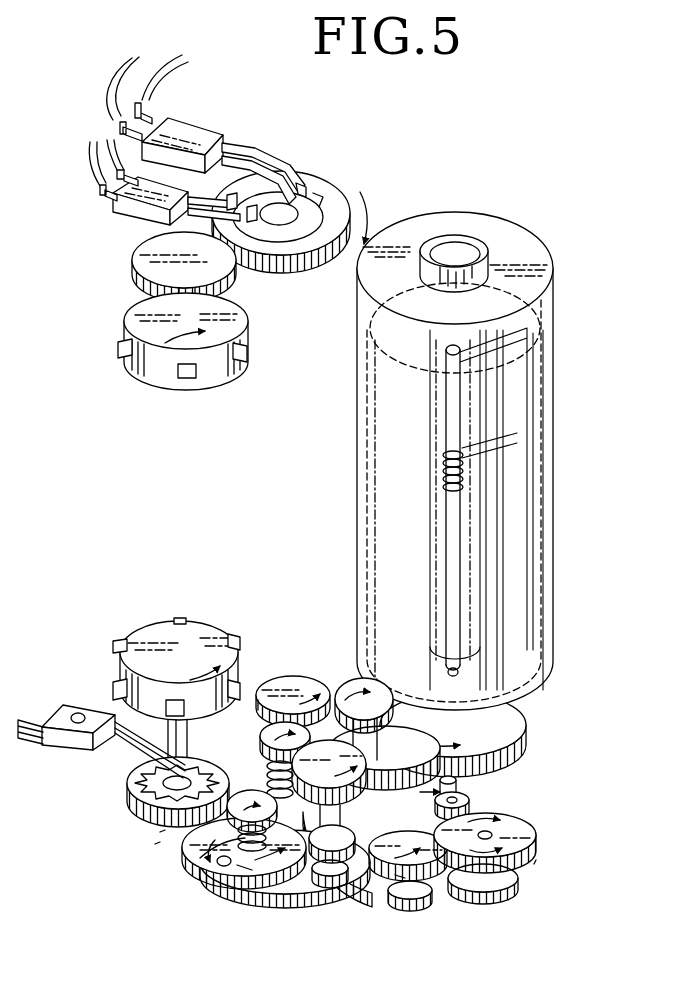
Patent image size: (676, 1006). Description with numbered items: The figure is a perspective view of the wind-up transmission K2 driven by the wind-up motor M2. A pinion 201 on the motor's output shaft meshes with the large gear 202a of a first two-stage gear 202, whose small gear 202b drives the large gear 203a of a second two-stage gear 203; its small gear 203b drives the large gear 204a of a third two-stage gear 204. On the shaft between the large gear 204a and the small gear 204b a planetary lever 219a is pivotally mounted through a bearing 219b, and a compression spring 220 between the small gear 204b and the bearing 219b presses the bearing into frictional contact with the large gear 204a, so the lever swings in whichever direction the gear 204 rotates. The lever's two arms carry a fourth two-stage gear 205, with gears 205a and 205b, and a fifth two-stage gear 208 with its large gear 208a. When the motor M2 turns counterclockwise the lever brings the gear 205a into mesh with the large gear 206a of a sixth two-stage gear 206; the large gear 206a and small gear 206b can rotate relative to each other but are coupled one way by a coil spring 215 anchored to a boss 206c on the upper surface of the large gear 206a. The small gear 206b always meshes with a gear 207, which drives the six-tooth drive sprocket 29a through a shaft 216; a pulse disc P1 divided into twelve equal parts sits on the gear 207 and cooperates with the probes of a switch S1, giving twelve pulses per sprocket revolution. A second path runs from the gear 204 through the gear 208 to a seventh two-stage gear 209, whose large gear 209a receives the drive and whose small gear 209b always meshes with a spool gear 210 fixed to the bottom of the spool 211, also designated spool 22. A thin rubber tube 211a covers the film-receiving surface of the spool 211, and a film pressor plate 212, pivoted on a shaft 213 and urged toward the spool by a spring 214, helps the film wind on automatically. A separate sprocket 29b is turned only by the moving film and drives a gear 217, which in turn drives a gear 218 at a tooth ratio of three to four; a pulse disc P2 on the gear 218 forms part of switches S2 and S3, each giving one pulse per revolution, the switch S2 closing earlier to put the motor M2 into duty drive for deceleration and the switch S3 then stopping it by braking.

The switch S1 is at (62, 745).
The switch S2 is at (118, 212).
The switch S3 is at (200, 124).
The pulse forming disc P1 is at (129, 804).
The pulse disc P2 is at (336, 186).
The wind-up motor M2 is at (360, 396).
The second gear train K2 is at (567, 788).
The spool 22 is at (568, 482).
The drive sprocket 29a is at (145, 638).
The sprocket 29b is at (160, 383).
The pinion 201 is at (485, 796).
The 2-stage gear 202 is at (545, 861).
The large gear 202a is at (527, 822).
The small gear 202b is at (510, 880).
The 2-stage gear 203 is at (410, 912).
The large gear 203a is at (410, 903).
The small gear 203b is at (428, 893).
The 2-stage gear 204 is at (155, 841).
The large gear 204a is at (299, 898).
The small gear 204b is at (248, 712).
The 2-stage gear 205 is at (329, 868).
The large gear 205a is at (328, 742).
The small gear 205b is at (326, 905).
The 2-stage gear 206 is at (264, 903).
The large gear 206a is at (232, 880).
The small gear 206b is at (230, 822).
The carrier pin 206c is at (216, 867).
The gear 207 is at (165, 829).
The 2-stage gear 208 is at (253, 676).
The large gear 208a is at (285, 678).
The 2-stage gear 209 is at (458, 786).
The large gear 209a is at (388, 740).
The small gear 209b is at (353, 682).
The spool gear 210 is at (522, 724).
The spool 211 is at (545, 640).
The rubber tube 211a is at (360, 445).
The film pressor plate 212 is at (530, 374).
The shaft 213 is at (445, 544).
The spring 214 is at (544, 436).
The coil spring 215 is at (256, 885).
The shaft 216 is at (148, 760).
The gear 217 is at (132, 266).
The gear 218 is at (350, 192).
The planetary lever 219a is at (376, 879).
The bearing 219b is at (248, 781).
The compression spring 220 is at (268, 750).